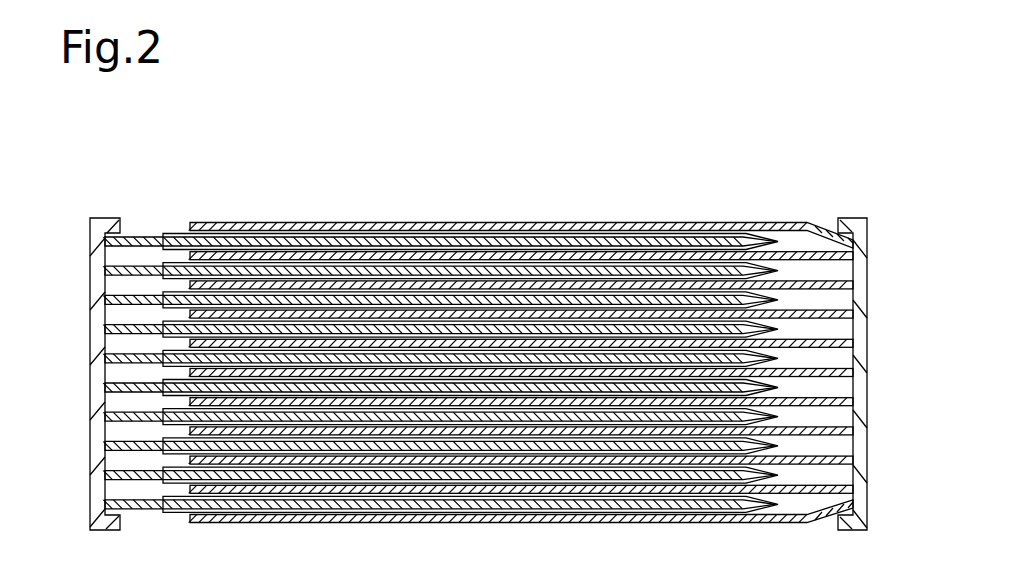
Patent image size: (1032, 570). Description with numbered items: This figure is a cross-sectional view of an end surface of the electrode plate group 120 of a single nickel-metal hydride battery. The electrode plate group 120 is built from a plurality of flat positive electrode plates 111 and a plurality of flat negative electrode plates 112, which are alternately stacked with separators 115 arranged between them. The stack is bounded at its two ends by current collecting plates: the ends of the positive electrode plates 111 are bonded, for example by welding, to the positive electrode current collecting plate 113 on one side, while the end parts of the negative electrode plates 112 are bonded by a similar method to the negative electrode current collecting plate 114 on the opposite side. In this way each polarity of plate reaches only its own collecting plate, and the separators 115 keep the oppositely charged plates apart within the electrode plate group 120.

The electrode plate group 120 is at (79, 185).
The positive electrode plate 111 is at (287, 222).
The negative electrode plate 112 is at (190, 224).
The positive electrode current collecting plate 113 is at (90, 323).
The negative electrode current collecting plate 114 is at (868, 366).
The separator 115 is at (162, 234).